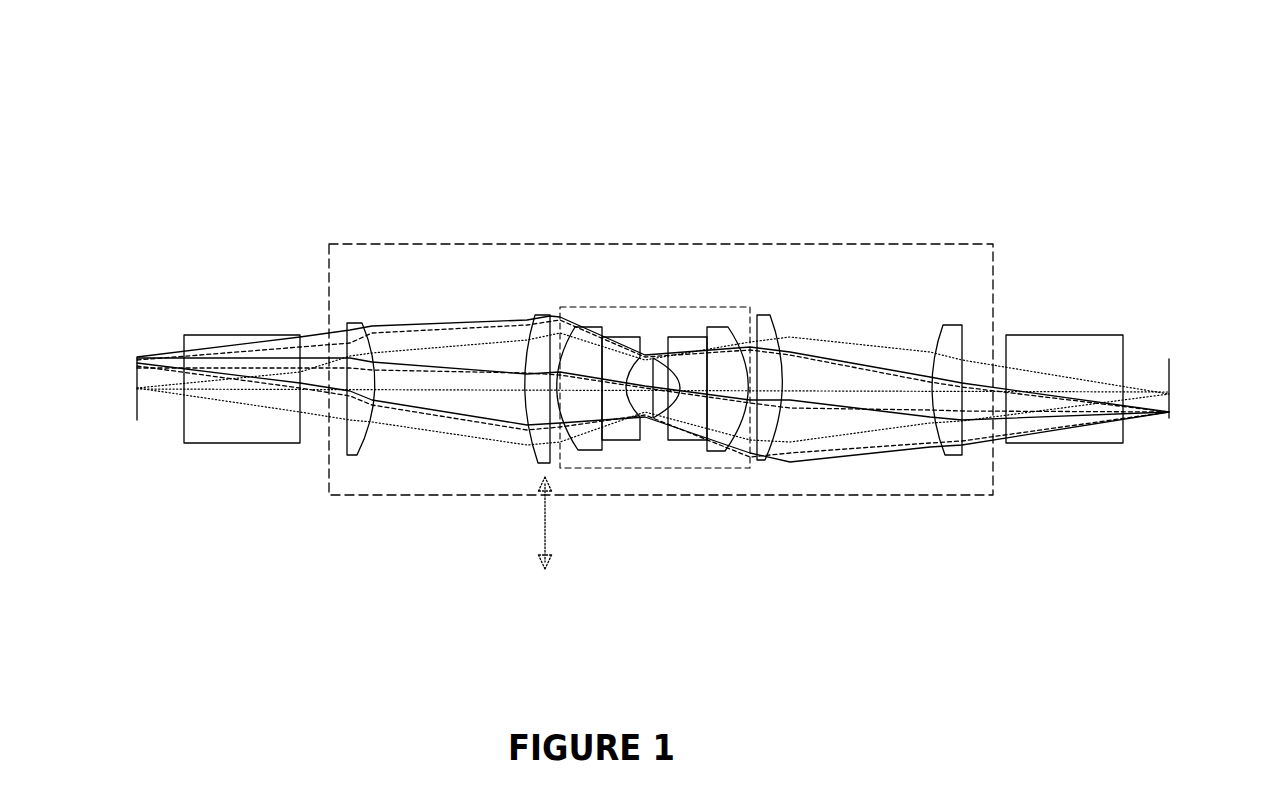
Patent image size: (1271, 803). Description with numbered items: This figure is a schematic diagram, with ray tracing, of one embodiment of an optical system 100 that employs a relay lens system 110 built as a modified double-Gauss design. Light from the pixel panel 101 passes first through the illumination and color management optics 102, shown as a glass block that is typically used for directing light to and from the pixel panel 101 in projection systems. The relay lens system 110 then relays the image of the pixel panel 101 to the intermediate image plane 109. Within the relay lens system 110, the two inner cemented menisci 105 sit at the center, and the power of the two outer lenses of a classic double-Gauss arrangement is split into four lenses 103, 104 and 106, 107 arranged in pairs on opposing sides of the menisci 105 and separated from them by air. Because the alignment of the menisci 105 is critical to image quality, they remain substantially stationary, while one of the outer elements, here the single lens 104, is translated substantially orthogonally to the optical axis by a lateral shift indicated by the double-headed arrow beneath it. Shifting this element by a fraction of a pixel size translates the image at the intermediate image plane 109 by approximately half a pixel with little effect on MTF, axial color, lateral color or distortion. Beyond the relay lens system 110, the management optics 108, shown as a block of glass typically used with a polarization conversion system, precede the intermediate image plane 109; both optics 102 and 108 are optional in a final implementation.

The optical system 100 is at (1025, 182).
The pixel panel 101 is at (137, 380).
The illumination and color management optics 102 is at (205, 333).
The lens 103 is at (397, 282).
The lens 104 is at (542, 358).
The inner cemented menisci 105 is at (605, 270).
The lens 106 is at (843, 282).
The lens 107 is at (938, 345).
The management optics 108 is at (1105, 333).
The intermediate image plane 109 is at (1220, 320).
The relay lens system 110 is at (817, 495).